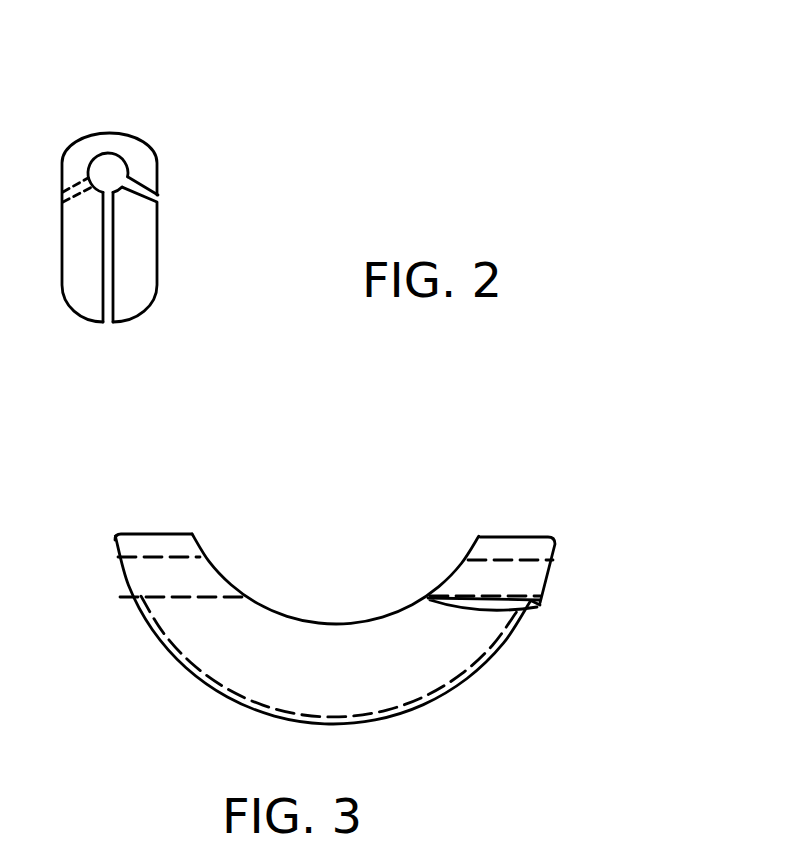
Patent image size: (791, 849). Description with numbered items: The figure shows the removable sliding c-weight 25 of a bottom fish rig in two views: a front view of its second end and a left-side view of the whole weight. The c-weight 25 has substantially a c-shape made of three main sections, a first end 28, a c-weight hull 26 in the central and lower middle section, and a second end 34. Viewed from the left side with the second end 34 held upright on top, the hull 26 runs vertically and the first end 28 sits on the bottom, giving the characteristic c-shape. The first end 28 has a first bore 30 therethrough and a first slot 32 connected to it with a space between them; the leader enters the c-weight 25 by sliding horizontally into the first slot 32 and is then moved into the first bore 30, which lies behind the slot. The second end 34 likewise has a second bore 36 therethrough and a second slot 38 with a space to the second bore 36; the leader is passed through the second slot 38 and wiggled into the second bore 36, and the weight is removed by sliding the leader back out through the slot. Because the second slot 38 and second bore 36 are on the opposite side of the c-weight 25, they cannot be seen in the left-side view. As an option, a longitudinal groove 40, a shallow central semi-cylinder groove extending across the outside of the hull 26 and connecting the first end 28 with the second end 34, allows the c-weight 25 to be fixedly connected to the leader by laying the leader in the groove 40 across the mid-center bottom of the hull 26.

In FIG. 2, the removable sliding c-weight 25 is at (338, 146).
In FIG. 3, the removable sliding c-weight 25 is at (511, 452).
In FIG. 2, the c-weight hull 26 is at (133, 302).
In FIG. 3, the c-weight hull 26 is at (403, 673).
In FIG. 3, the first end 28 is at (533, 620).
In FIG. 3, the first bore 30 is at (550, 575).
In FIG. 3, the first slot 32 is at (430, 597).
In FIG. 2, the second end 34 is at (143, 242).
In FIG. 3, the second end 34 is at (153, 638).
In FIG. 2, the second bore 36 is at (110, 165).
In FIG. 2, the second slot 38 is at (157, 193).
In FIG. 2, the longitudinal groove 40 is at (108, 323).